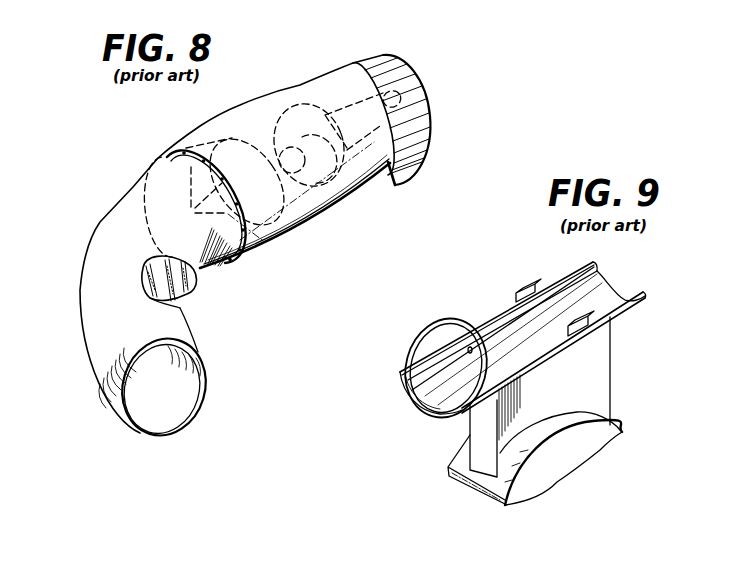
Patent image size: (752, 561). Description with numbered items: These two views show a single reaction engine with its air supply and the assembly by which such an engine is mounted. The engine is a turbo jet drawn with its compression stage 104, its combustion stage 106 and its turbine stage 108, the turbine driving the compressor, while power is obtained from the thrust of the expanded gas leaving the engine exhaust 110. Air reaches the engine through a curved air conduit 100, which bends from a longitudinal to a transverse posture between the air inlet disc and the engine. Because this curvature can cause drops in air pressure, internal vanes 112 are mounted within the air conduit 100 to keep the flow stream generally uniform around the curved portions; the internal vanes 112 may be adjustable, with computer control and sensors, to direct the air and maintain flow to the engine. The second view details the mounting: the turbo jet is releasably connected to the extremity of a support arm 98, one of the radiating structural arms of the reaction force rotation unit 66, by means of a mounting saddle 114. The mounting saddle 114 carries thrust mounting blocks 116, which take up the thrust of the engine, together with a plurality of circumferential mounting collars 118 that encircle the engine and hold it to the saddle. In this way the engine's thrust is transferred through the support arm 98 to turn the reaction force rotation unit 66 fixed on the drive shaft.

In FIG. 8, the air conduit 100 is at (90, 362).
In FIG. 8, the compression stage 104 is at (237, 142).
In FIG. 8, the combustion stage 106 is at (302, 197).
In FIG. 8, the turbine stage 108 is at (303, 106).
In FIG. 8, the engine exhaust 110 is at (426, 95).
In FIG. 8, the internal vanes 112 is at (146, 272).
In FIG. 9, the mounting saddle 114 is at (424, 413).
In FIG. 9, the thrust mounting blocks 116 is at (549, 260).
In FIG. 9, the circumferential mounting collars 118 is at (474, 295).
In FIG. 9, the support arm 98 is at (604, 389).
In FIG. 9, the reaction force rotation unit 66 is at (622, 428).